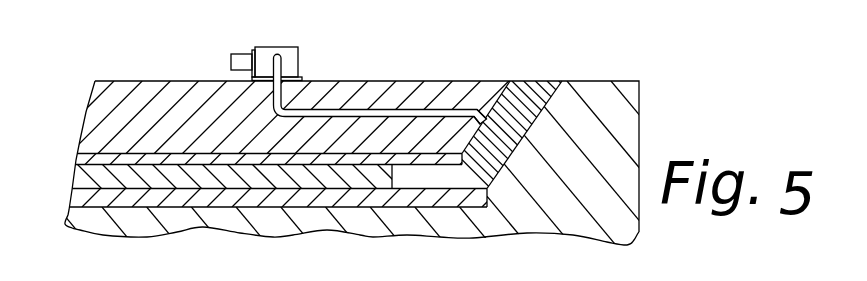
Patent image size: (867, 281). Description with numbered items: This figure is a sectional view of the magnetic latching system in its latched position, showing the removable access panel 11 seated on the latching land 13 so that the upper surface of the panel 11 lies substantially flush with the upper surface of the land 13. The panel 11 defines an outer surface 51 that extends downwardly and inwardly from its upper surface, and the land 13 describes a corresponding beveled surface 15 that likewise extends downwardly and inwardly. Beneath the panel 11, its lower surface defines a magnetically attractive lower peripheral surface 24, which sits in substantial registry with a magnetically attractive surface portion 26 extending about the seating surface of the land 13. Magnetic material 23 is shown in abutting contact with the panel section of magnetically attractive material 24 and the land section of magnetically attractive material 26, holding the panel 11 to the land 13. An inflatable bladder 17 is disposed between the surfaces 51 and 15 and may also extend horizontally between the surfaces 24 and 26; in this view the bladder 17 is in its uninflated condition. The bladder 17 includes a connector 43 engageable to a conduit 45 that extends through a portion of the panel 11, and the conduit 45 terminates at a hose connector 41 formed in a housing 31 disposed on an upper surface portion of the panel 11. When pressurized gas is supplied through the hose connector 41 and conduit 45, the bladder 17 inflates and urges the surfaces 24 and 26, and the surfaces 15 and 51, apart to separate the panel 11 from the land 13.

The removable access panel 11 is at (142, 75).
The latching land 13 is at (615, 77).
The beveled surface 15 is at (532, 124).
The inflatable bladder 17 is at (542, 88).
The magnetic material 23 is at (77, 178).
The magnetically attractive lower peripheral surface 24 is at (78, 157).
The magnetically attractive surface portion 26 is at (72, 207).
The housing 31 is at (280, 47).
The hose connector 41 is at (231, 54).
The connector 43 is at (482, 116).
The conduit 45 is at (340, 110).
The outer surface 51 is at (502, 97).